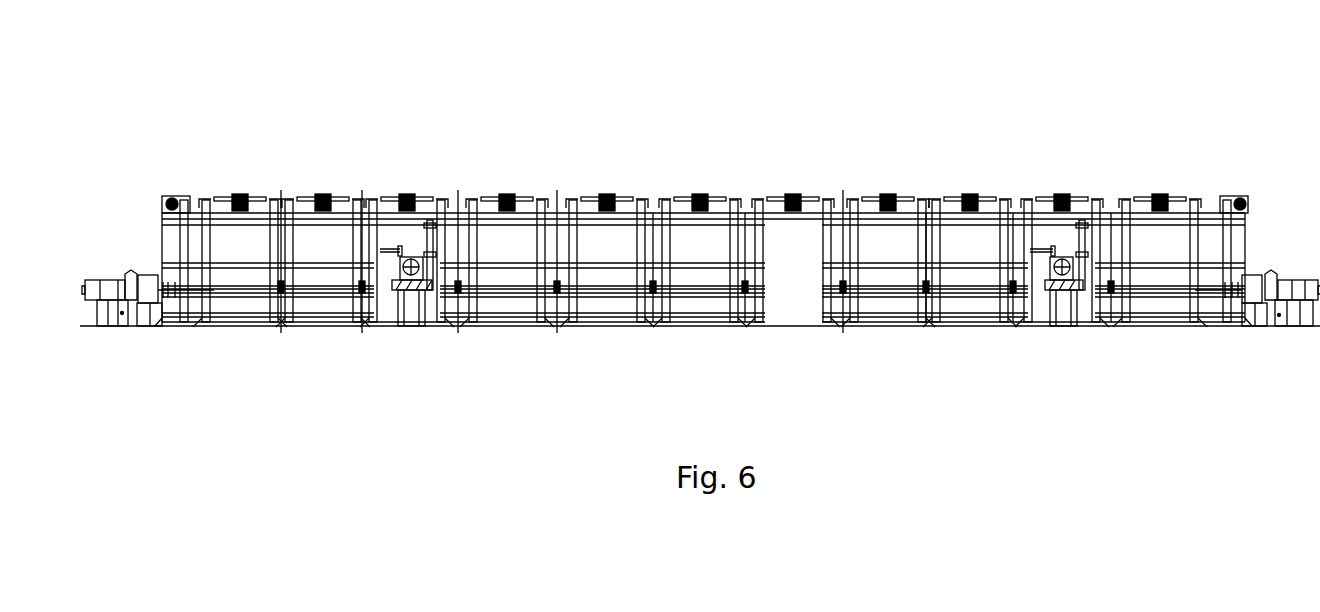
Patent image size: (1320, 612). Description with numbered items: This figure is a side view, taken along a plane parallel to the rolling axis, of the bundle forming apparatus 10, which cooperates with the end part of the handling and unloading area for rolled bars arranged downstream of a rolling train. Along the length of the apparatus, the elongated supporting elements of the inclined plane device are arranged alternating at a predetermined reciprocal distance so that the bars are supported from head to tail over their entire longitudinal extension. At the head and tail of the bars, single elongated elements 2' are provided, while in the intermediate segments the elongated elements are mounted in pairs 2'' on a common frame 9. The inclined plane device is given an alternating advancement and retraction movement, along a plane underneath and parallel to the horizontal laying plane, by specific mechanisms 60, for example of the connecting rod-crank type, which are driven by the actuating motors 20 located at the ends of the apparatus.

The bundle forming apparatus 10 is at (630, 122).
The single elongated element 2' is at (703, 204).
The pair of elongated elements 2'' is at (281, 201).
The common frame 9 is at (712, 192).
The actuation mechanism 60 is at (440, 224).
The actuating motor 20 is at (410, 305).